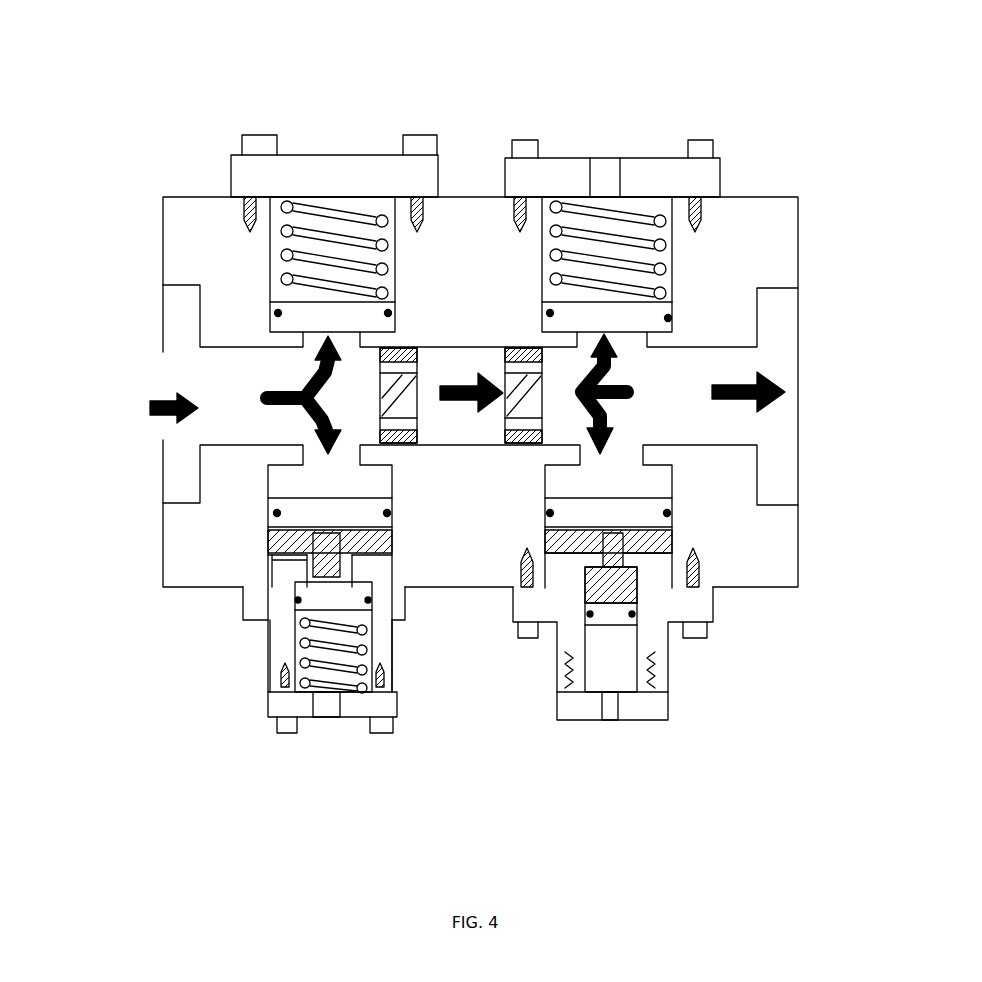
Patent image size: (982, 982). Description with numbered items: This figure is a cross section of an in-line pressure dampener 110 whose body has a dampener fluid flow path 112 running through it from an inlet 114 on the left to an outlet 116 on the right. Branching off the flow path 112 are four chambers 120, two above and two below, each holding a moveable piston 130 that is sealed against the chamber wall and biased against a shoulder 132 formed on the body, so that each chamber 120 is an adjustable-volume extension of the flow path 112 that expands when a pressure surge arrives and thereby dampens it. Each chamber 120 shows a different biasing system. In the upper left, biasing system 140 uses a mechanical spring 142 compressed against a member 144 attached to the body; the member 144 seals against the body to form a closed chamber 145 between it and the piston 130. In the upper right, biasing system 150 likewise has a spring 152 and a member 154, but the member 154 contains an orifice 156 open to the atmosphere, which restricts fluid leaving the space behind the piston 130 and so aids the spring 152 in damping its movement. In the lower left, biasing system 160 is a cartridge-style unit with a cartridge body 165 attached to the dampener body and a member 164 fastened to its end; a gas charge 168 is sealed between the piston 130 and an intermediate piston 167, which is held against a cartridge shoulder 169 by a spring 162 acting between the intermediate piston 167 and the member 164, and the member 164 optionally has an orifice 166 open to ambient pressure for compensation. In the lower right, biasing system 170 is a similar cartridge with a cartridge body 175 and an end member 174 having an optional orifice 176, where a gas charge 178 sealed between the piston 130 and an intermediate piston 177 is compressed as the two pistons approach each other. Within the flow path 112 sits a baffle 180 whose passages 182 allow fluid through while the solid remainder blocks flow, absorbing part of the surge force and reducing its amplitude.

The pressure dampener 110 is at (145, 100).
The dampener fluid flow path 112 is at (474, 377).
The inlet 114 is at (149, 408).
The outlet 116 is at (777, 392).
The chamber 120 is at (317, 340).
The piston 130 is at (273, 312).
The shoulder 132 is at (317, 330).
The biasing system 140 is at (442, 122).
The mechanical spring 142 is at (397, 275).
The member 144 is at (320, 147).
The closed chamber 145 is at (267, 258).
The biasing system 150 is at (592, 147).
The spring 152 is at (547, 293).
The member 154 is at (572, 158).
The orifice 156 is at (627, 180).
The biasing system 160 is at (255, 760).
The spring 162 is at (362, 650).
The member 164 is at (397, 703).
The cartridge body 165 is at (243, 605).
The orifice 166 is at (327, 707).
The intermediate piston 167 is at (290, 600).
The gas charge 168 is at (395, 537).
The cartridge shoulder 169 is at (355, 587).
The biasing system 170 is at (705, 782).
The member 174 is at (557, 705).
The cartridge body 175 is at (670, 653).
The orifice 176 is at (597, 728).
The intermediate piston 177 is at (598, 627).
The gas charge 178 is at (623, 585).
The baffle 180 is at (417, 417).
The passage 182 is at (380, 427).